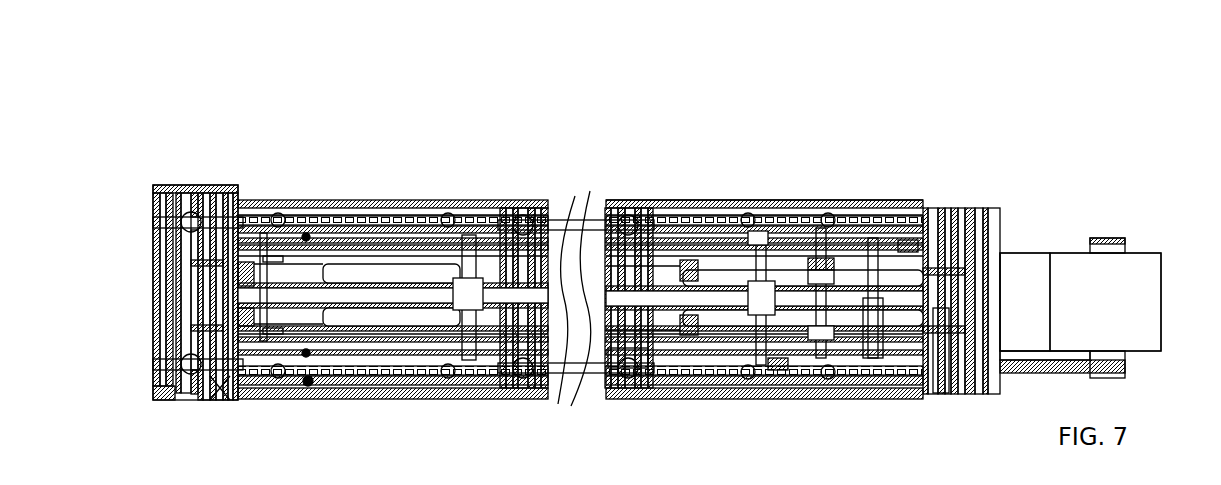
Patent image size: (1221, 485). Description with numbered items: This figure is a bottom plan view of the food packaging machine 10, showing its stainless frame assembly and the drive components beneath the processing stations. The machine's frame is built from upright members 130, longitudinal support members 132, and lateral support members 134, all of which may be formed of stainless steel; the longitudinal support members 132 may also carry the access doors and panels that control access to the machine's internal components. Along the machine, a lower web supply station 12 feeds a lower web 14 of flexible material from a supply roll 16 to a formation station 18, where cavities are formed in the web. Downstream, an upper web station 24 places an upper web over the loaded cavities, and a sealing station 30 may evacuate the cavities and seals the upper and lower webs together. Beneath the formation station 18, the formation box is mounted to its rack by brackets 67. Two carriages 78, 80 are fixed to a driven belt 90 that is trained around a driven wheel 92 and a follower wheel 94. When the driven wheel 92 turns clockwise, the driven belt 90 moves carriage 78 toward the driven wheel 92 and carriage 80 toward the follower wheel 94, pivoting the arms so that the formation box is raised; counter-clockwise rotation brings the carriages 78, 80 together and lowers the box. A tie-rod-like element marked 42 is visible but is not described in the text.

The food packaging machine 10 is at (940, 80).
The lower web supply station 12 is at (1097, 208).
The lower web 14 is at (1014, 270).
The supply roll 16 is at (1140, 290).
The formation station 18 is at (806, 186).
The upper web station 24 is at (388, 172).
The sealing station 30 is at (160, 172).
The tie rod 42 is at (190, 206).
The brackets 67 is at (674, 250).
The carriage 78 is at (750, 224).
The carriage 80 is at (816, 262).
The driven belt 90 is at (860, 300).
The driven wheel 92 is at (616, 386).
The follower wheel 94 is at (946, 388).
The upright members 130 is at (516, 206).
The longitudinal support members 132 is at (290, 194).
The lateral support members 134 is at (226, 196).